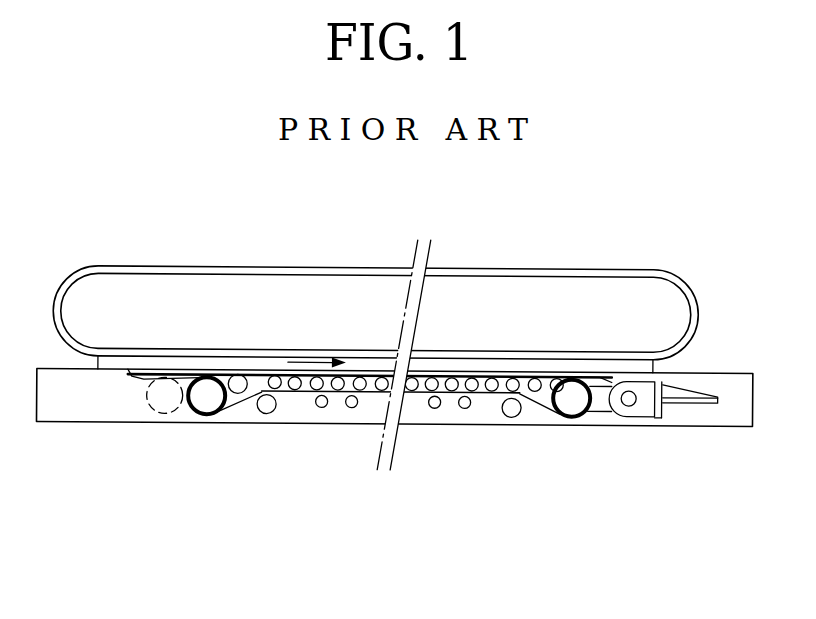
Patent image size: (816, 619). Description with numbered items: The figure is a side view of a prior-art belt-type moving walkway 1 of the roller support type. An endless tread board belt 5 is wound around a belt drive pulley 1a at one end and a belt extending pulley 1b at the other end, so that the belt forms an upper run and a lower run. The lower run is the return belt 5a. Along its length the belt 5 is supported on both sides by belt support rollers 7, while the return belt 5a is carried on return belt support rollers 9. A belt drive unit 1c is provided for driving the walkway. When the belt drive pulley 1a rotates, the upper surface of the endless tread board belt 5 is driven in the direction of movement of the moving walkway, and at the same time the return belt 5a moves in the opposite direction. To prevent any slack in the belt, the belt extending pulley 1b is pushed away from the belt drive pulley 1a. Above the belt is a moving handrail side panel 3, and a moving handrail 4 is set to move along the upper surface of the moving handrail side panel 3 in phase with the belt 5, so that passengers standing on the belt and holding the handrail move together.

The moving walkway 1 is at (181, 246).
The belt drive pulley 1a is at (572, 400).
The belt extending pulley 1b is at (205, 400).
The belt drive unit 1c is at (636, 400).
The moving handrail side panel 3 is at (262, 276).
The moving handrails 4 is at (502, 270).
The belt 5 is at (369, 401).
The return belt 5a is at (367, 391).
The belt support rollers 7 is at (290, 394).
The return belt support rollers 9 is at (433, 409).